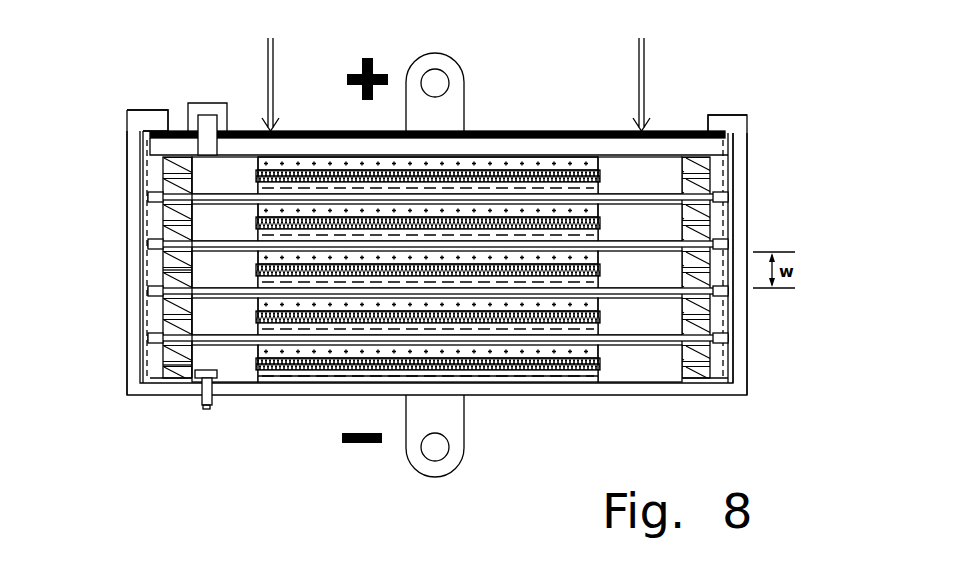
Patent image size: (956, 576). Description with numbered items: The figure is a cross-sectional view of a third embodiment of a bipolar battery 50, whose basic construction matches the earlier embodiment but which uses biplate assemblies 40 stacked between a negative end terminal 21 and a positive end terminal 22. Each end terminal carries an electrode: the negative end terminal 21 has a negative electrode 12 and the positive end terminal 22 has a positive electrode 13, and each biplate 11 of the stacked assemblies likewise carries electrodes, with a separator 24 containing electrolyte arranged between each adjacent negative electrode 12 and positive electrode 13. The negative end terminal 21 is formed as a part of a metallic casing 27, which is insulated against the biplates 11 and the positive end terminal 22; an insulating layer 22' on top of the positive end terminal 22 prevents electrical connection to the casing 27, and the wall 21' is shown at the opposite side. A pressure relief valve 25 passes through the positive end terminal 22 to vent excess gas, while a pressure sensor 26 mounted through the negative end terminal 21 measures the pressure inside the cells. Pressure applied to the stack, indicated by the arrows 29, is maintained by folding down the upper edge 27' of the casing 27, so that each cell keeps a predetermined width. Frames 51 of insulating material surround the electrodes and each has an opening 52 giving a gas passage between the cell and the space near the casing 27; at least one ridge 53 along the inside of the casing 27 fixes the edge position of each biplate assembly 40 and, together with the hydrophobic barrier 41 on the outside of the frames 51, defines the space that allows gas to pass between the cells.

The bipolar battery 50 is at (119, 61).
The upper edge of the metallic casing 27' is at (437, 68).
The metallic casing 27 is at (419, 263).
The negative tab wall 21' is at (88, 246).
The insulating layer 22' is at (786, 240).
The pressure relief valve 25 is at (209, 94).
The pressure sensor 26 is at (195, 409).
The arrows 29 is at (275, 73).
The positive end terminal 22 is at (405, 65).
The negative end terminal 21 is at (403, 471).
The separator 24 is at (496, 170).
The positive electrode 13 is at (563, 163).
The negative electrode 12 is at (520, 382).
The biplate 11 is at (163, 208).
The frames 51 is at (165, 168).
The opening 52 is at (163, 365).
The ridge 53 is at (162, 285).
The hydrophobic barrier 41 is at (155, 198).
The biplate assemblies 40 is at (205, 254).